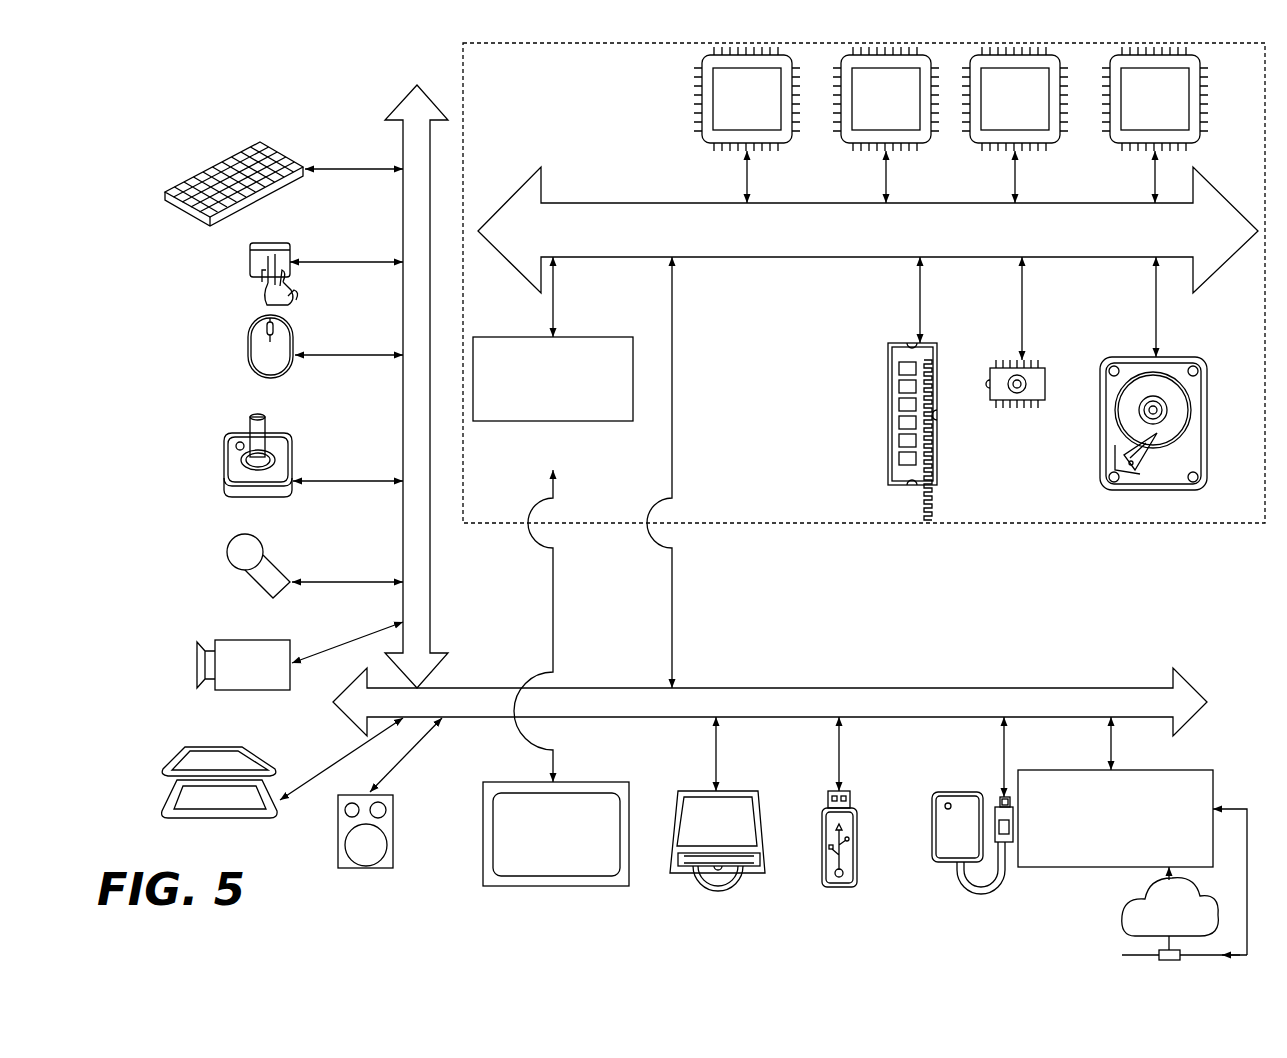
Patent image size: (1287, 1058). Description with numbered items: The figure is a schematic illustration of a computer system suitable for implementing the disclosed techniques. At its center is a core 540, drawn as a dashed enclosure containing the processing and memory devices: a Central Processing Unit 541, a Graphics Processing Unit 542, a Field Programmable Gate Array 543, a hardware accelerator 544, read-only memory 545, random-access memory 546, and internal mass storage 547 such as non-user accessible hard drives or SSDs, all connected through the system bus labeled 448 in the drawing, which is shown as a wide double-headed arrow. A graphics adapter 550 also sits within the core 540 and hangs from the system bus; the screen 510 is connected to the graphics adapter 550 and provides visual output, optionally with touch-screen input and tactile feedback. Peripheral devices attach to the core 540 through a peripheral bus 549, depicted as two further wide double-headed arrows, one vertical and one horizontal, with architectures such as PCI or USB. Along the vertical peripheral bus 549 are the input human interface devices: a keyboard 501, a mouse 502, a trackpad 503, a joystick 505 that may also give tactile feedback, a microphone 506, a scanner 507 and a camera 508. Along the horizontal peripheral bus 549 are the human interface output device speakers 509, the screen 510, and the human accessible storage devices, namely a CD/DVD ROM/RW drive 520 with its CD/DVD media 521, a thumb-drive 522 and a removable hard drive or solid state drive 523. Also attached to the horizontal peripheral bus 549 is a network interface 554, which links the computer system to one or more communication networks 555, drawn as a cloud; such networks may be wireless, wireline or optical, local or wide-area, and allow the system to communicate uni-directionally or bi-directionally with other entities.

The system bus 448 is at (868, 230).
The keyboard 501 is at (165, 195).
The mouse 502 is at (248, 342).
The trackpad 503 is at (250, 262).
The joystick 505 is at (228, 478).
The microphone 506 is at (227, 550).
The scanner 507 is at (162, 808).
The camera 508 is at (197, 663).
The speakers 509 is at (363, 868).
The touch screen 510 is at (555, 887).
The CD/DVD ROM/RW 520 is at (762, 873).
The CD/DVD media 521 is at (700, 878).
The thumb-drive 522 is at (845, 887).
The removable hard drive or solid state drive 523 is at (945, 862).
The core 540 is at (858, 523).
The Central Processing Unit 541 is at (727, 126).
The Graphics Processing Unit 542 is at (866, 126).
The Field Programmable Gate Array 543 is at (995, 126).
The hardware accelerator 544 is at (1135, 126).
The read-only memory 545 is at (1010, 410).
The random-access memory 546 is at (888, 447).
The internal mass storage 547 is at (1115, 355).
The peripheral bus 549 is at (403, 130).
The graphics adapter 550 is at (534, 416).
The network interface 554 is at (1064, 865).
The communication network 555 is at (1122, 925).